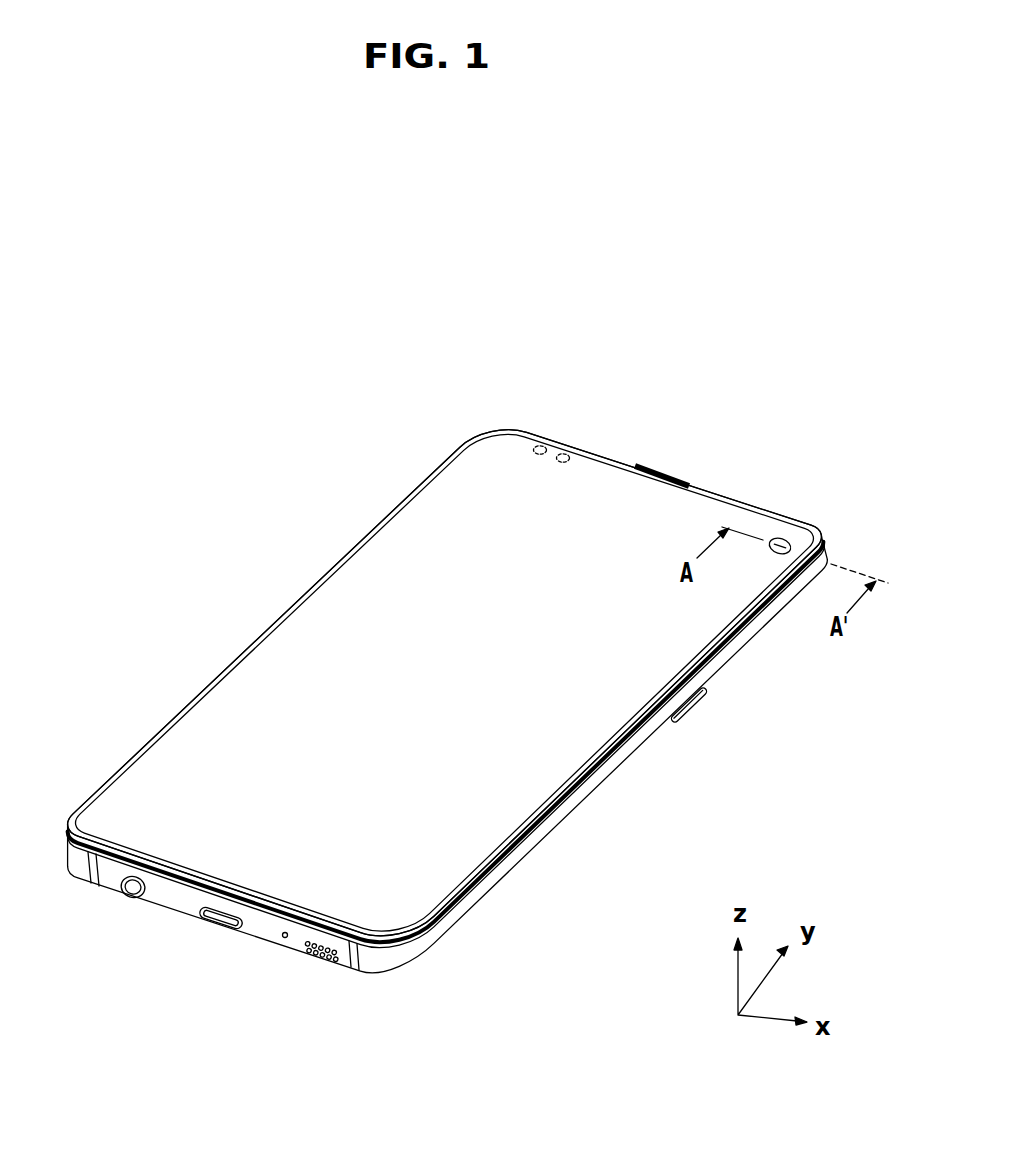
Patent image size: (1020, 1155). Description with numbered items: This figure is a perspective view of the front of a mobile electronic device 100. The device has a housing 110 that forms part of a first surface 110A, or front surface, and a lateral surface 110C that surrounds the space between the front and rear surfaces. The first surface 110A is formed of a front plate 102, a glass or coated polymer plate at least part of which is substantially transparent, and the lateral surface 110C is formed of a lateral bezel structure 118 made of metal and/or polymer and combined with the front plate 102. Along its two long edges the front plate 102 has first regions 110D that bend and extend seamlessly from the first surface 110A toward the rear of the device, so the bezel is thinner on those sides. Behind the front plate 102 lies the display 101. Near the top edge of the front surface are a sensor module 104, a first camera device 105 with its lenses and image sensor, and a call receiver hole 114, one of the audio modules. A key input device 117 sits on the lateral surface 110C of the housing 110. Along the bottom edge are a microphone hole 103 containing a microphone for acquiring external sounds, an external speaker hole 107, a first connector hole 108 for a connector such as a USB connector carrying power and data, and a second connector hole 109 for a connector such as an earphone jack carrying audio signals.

The mobile electronic device 100 is at (253, 607).
The display 101 is at (257, 745).
The front plate 102 is at (813, 548).
The microphone hole 103 is at (287, 935).
The sensor module 104 is at (563, 454).
The first camera device 105 is at (783, 539).
The external speaker hole 107 is at (318, 960).
The first connector hole 108 is at (224, 926).
The second connector hole 109 is at (125, 895).
The housing 110 is at (621, 778).
The first surface 110A is at (412, 592).
The lateral surface 110C is at (526, 861).
The first regions 110D is at (164, 757).
The call receiver hole 114 is at (663, 472).
The key input device 117 is at (697, 712).
The lateral bezel structure 118 is at (750, 642).